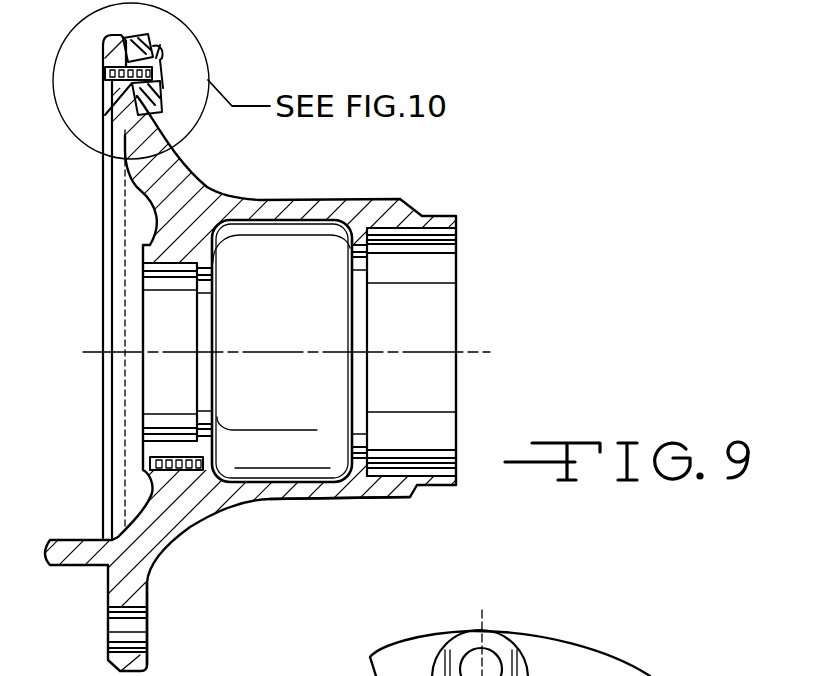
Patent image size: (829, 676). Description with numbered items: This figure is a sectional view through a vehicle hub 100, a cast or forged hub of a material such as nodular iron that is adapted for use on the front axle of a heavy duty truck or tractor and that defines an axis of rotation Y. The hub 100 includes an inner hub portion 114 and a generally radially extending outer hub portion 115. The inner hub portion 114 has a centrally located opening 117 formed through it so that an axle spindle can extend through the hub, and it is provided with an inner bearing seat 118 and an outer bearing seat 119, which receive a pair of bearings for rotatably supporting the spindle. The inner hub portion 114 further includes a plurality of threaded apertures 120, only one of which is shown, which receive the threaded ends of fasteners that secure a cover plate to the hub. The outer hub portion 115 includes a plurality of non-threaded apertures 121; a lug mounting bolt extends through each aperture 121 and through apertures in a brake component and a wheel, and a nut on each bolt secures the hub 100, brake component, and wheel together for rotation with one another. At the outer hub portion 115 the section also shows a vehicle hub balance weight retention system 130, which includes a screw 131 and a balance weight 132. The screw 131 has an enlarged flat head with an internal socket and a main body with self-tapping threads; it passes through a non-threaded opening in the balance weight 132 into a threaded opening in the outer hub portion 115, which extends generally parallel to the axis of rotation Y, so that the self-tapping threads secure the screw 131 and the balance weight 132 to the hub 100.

The vehicle hub 100 is at (466, 192).
The inner hub portion 114 is at (322, 495).
The outer hub portion 115 is at (140, 575).
The opening 117 is at (442, 270).
The inner bearing seat 118 is at (413, 455).
The outer bearing seat 119 is at (167, 437).
The threaded apertures 120 is at (147, 465).
The non-threaded apertures 121 is at (148, 648).
The vehicle hub balance weight retention system 130 is at (246, 60).
The screw 131 is at (158, 63).
The balance weight 132 is at (165, 136).
The axis of rotation Y is at (432, 352).